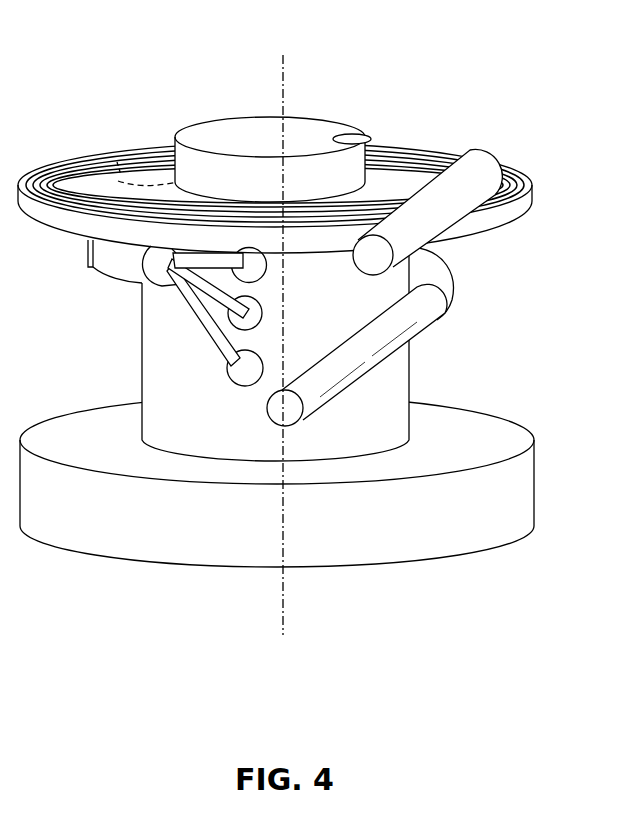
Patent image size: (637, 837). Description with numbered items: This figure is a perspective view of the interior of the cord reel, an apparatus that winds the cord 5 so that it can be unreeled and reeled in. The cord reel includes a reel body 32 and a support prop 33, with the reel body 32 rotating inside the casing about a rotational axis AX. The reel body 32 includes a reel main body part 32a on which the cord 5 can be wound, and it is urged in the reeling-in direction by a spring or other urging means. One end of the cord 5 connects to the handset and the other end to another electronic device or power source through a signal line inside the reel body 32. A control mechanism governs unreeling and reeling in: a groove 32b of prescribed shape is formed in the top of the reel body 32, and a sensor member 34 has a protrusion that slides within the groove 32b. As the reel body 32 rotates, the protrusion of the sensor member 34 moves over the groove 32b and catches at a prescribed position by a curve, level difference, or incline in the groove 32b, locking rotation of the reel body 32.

The cord 5 is at (394, 258).
The reel body 32 is at (303, 185).
The reel main body part 32a is at (332, 340).
The groove 32b is at (275, 130).
The support prop 33 is at (273, 110).
The sensor member 34 is at (182, 105).
The rotational axis AX is at (282, 333).